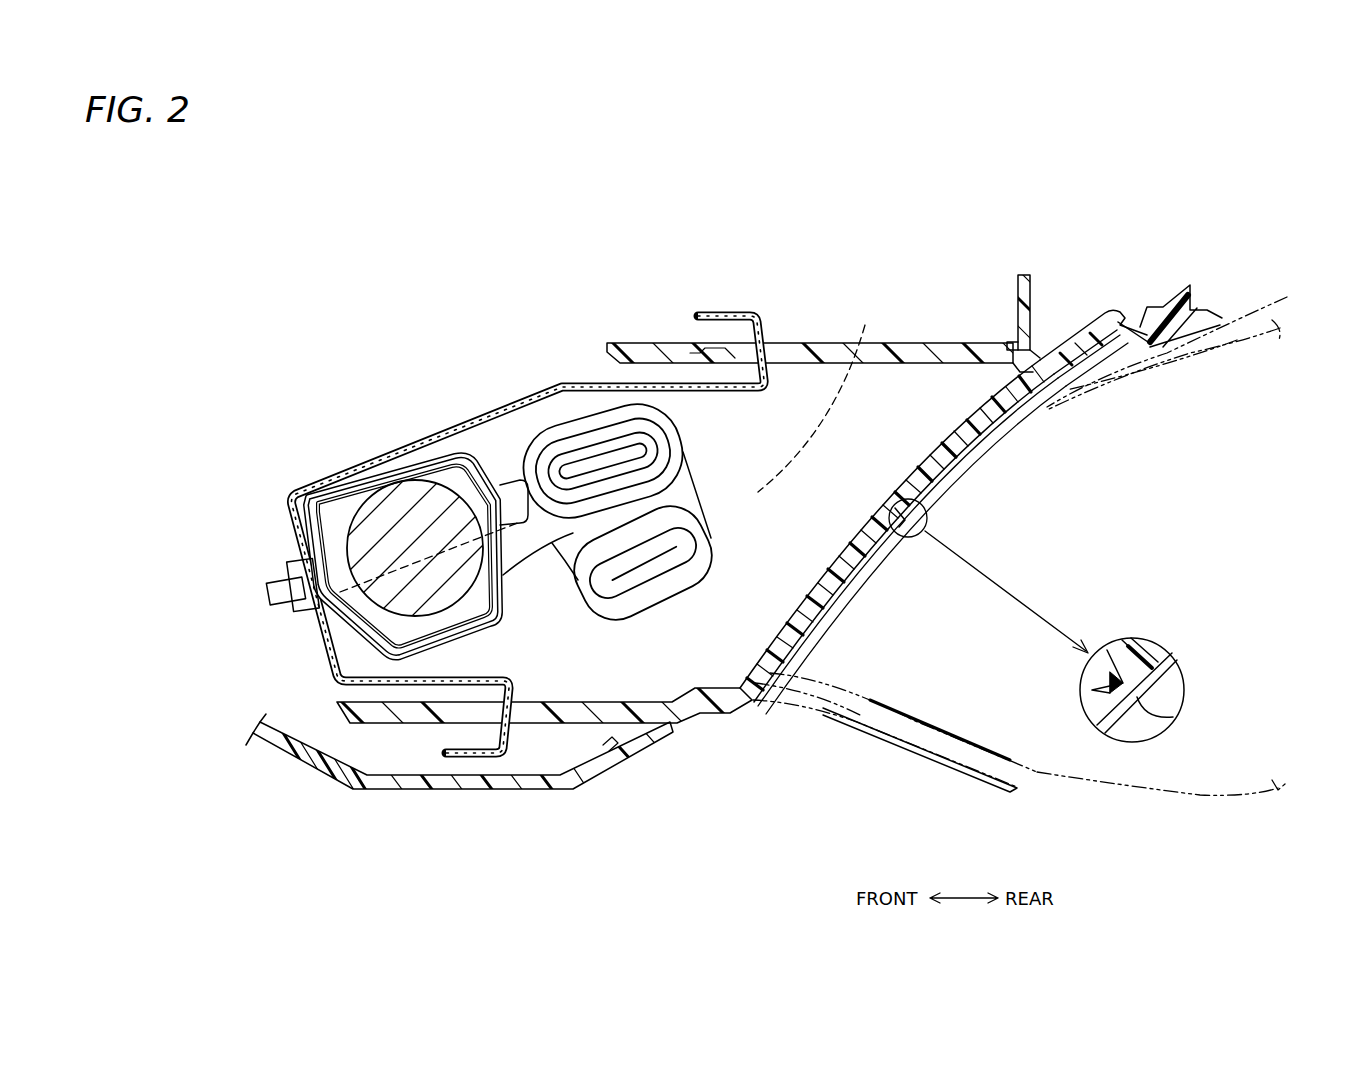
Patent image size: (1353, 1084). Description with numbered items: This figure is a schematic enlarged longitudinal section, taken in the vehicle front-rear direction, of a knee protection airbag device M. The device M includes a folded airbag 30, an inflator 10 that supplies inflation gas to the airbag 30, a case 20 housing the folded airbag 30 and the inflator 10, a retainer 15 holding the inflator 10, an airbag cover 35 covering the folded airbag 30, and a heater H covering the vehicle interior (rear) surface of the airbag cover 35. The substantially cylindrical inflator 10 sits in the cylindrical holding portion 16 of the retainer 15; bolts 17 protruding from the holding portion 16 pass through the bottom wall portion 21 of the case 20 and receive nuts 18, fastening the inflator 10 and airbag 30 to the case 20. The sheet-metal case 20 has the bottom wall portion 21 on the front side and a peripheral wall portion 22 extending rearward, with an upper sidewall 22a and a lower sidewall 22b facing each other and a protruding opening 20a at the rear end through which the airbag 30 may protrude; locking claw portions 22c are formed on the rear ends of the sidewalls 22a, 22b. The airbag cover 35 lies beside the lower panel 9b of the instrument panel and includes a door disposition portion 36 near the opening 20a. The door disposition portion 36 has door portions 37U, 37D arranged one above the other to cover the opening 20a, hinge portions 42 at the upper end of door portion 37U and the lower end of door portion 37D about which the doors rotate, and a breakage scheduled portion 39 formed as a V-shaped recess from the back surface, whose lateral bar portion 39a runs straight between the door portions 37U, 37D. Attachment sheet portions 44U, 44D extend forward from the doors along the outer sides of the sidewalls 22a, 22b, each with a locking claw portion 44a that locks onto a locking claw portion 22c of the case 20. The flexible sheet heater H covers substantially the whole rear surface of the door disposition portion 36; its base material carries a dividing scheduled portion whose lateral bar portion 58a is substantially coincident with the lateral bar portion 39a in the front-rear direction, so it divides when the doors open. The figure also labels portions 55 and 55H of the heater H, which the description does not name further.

The lower panel 9b is at (1205, 305).
The inflator 10 is at (378, 494).
The retainer 15 is at (436, 539).
The holding portion 16 is at (436, 539).
The bolt 17 is at (277, 600).
The nut 18 is at (293, 580).
The case 20 is at (766, 367).
The protruding opening 20a is at (822, 395).
The bottom wall portion 21 is at (491, 538).
The peripheral wall portion 22 is at (491, 538).
The upper sidewall 22a is at (528, 556).
The lower sidewall 22b is at (432, 682).
The locking claw portion 22c is at (528, 538).
The airbag 30 is at (650, 612).
The airbag cover 35 is at (1062, 253).
The door disposition portion 36 is at (1080, 318).
The door portion 37U is at (987, 537).
The door portion 37D is at (868, 578).
The breakage scheduled portion 39 is at (1105, 658).
The lateral bar portion 39a is at (888, 490).
The hinge portion 42 is at (1008, 376).
The attachment sheet portion 44U is at (820, 350).
The attachment sheet portion 44D is at (612, 762).
The locking claw portion 44a is at (776, 350).
The trim cover 55 is at (1250, 313).
The hole in trim cover 55H is at (1170, 672).
The lateral bar portion 58a is at (1172, 706).
The heater H is at (850, 605).
The airbag device M is at (236, 660).